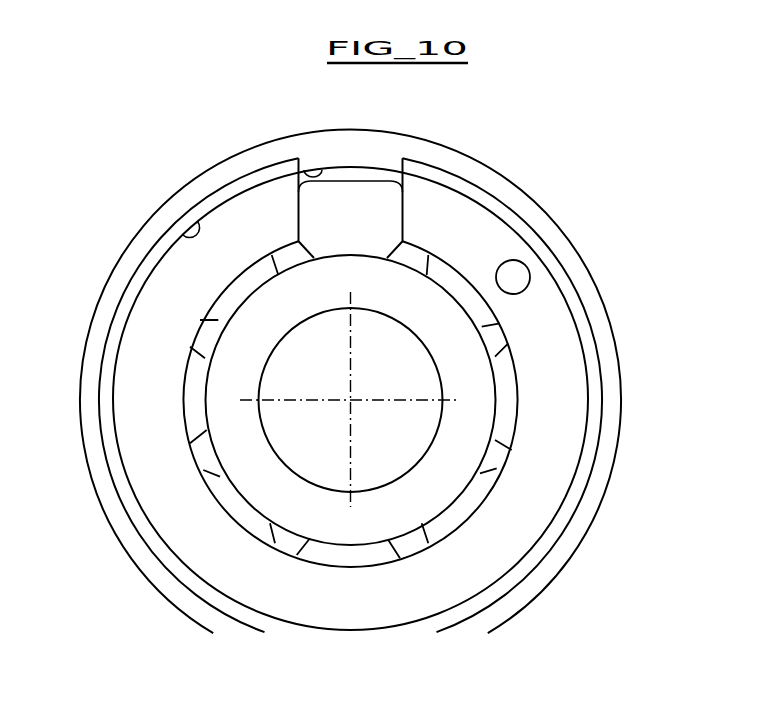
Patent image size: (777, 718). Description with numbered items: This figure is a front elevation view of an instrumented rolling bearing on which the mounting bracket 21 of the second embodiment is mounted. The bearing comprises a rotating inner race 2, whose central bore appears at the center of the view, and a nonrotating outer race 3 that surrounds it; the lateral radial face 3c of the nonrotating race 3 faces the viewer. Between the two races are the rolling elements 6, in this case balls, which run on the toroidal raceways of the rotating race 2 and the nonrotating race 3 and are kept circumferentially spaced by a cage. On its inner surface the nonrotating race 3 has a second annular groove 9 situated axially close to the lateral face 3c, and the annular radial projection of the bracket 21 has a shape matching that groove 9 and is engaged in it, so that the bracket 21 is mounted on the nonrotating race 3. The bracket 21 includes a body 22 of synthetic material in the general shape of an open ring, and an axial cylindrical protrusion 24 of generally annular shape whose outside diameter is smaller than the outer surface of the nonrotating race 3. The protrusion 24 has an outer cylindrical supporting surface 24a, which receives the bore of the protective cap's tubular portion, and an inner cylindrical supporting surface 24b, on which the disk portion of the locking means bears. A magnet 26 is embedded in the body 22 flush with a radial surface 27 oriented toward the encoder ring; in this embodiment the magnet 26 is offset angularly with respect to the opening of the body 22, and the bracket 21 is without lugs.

The rotating inner race 2 is at (257, 383).
The nonrotating outer race 3 is at (344, 133).
The lateral radial face 3c is at (255, 160).
The rolling elements 6 is at (377, 200).
The second annular groove 9 is at (320, 178).
The mounting bracket 21 is at (612, 492).
The body 22 is at (560, 330).
The axial cylindrical protrusion 24 is at (528, 233).
The outer cylindrical supporting surface 24a is at (474, 183).
The inner cylindrical supporting surface 24b is at (183, 235).
The magnet 26 is at (520, 277).
The radial surface 27 is at (570, 392).